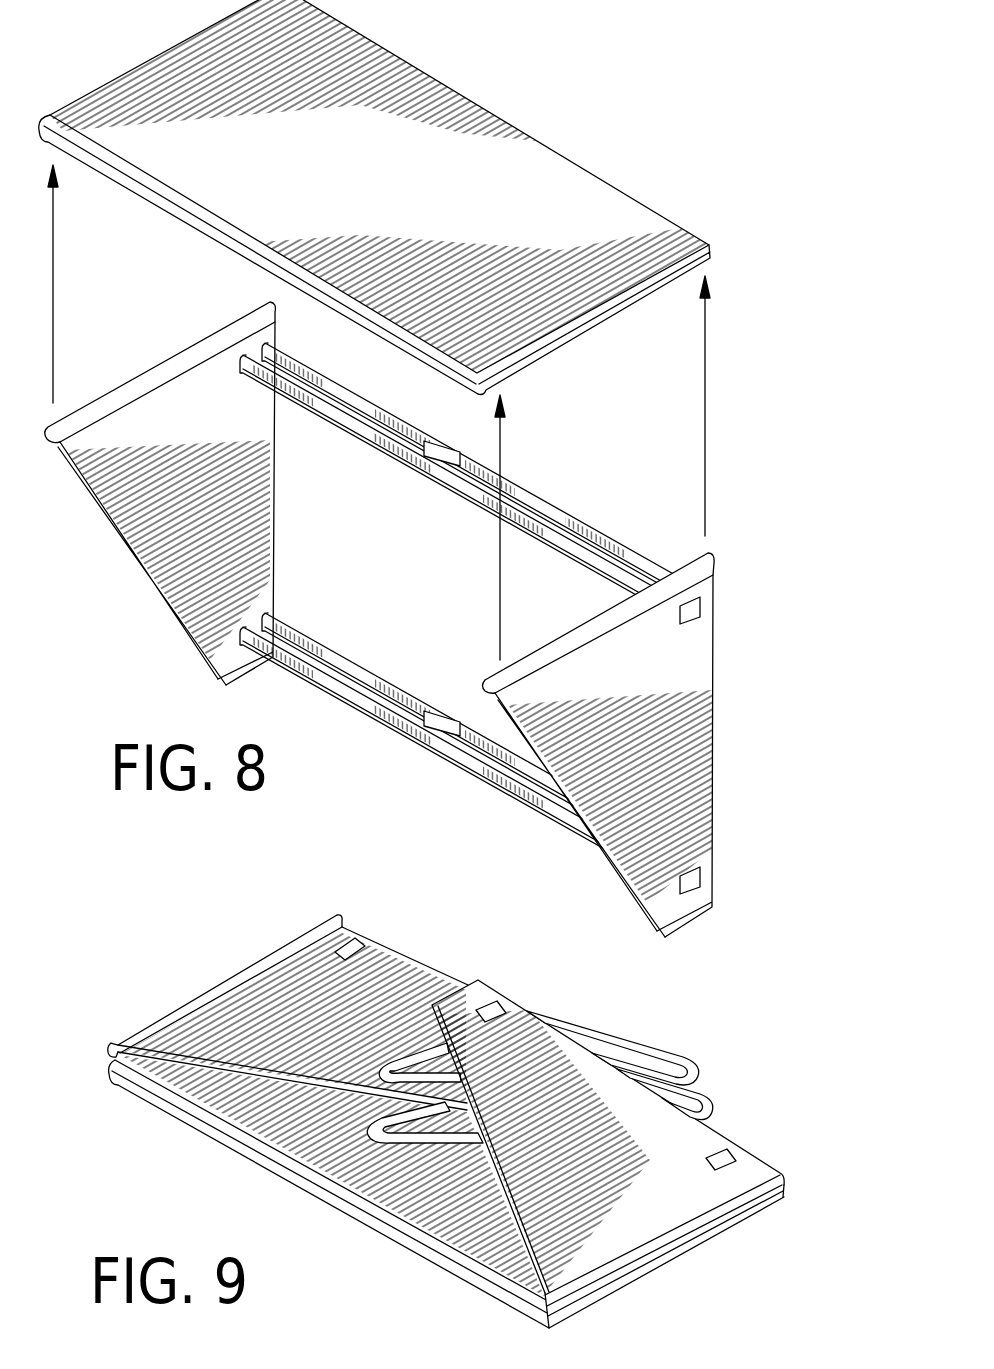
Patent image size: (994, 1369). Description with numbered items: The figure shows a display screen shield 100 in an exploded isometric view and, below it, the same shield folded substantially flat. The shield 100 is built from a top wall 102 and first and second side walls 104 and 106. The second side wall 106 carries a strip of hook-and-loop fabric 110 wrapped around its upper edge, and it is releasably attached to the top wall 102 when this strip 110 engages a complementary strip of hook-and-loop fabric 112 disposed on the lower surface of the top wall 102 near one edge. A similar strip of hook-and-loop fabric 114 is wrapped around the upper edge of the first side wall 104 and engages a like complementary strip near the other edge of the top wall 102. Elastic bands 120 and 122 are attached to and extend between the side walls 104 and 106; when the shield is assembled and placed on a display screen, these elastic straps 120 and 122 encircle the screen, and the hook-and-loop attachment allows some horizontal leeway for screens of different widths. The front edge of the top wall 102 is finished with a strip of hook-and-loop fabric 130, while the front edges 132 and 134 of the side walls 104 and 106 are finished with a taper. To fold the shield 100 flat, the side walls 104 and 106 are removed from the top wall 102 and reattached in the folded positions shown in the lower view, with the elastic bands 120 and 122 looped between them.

In FIG. 8, the display screen shield 100 is at (775, 103).
In FIG. 9, the display screen shield 100 is at (163, 920).
In FIG. 8, the top wall 102 is at (458, 148).
In FIG. 9, the top wall 102 is at (307, 1132).
In FIG. 8, the first side wall 104 is at (150, 515).
In FIG. 9, the first side wall 104 is at (217, 1027).
In FIG. 8, the second side wall 106 is at (653, 747).
In FIG. 9, the second side wall 106 is at (663, 1157).
In FIG. 8, the strip of hook-and-loop fabric 110 is at (684, 571).
In FIG. 9, the strip of hook-and-loop fabric 110 is at (643, 1240).
In FIG. 8, the complementary strip of hook-and-loop fabric 112 is at (577, 338).
In FIG. 9, the complementary strip of hook-and-loop fabric 112 is at (733, 1207).
In FIG. 8, the strip of hook-and-loop fabric 114 is at (177, 360).
In FIG. 9, the strip of hook-and-loop fabric 114 is at (262, 963).
In FIG. 8, the first elastic band 120 is at (372, 712).
In FIG. 9, the first elastic band 120 is at (627, 1037).
In FIG. 8, the elastic strap 122 is at (393, 448).
In FIG. 9, the elastic strap 122 is at (373, 1133).
In FIG. 8, the strip of hook-and-loop fabric 130 is at (237, 230).
In FIG. 8, the front edge of first side wall 132 is at (177, 617).
In FIG. 8, the front edge of second side wall 134 is at (627, 883).